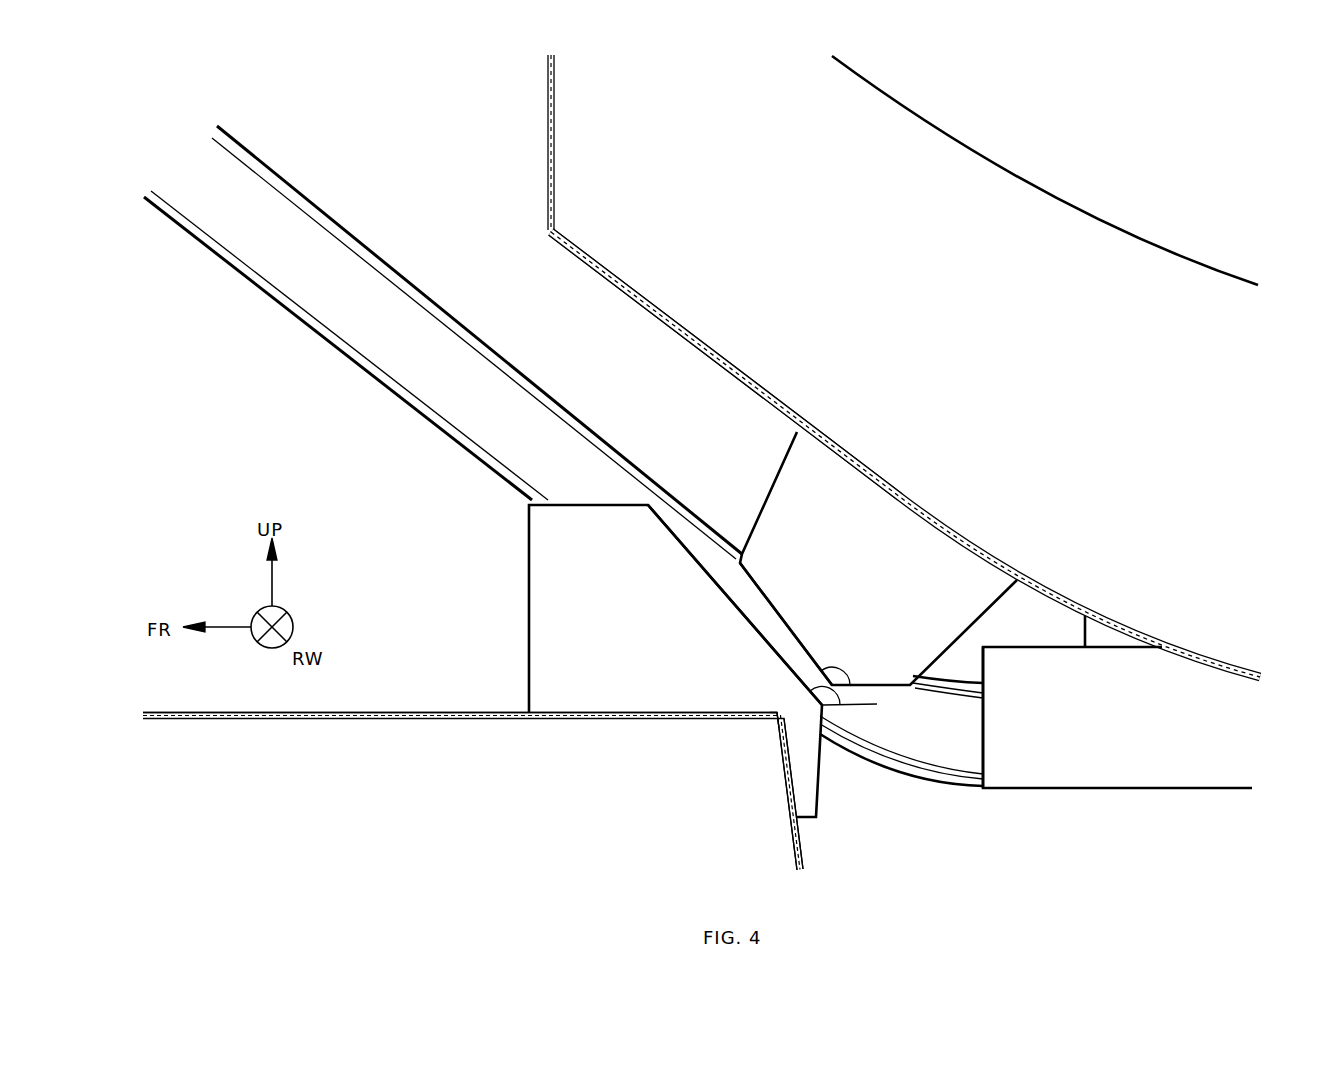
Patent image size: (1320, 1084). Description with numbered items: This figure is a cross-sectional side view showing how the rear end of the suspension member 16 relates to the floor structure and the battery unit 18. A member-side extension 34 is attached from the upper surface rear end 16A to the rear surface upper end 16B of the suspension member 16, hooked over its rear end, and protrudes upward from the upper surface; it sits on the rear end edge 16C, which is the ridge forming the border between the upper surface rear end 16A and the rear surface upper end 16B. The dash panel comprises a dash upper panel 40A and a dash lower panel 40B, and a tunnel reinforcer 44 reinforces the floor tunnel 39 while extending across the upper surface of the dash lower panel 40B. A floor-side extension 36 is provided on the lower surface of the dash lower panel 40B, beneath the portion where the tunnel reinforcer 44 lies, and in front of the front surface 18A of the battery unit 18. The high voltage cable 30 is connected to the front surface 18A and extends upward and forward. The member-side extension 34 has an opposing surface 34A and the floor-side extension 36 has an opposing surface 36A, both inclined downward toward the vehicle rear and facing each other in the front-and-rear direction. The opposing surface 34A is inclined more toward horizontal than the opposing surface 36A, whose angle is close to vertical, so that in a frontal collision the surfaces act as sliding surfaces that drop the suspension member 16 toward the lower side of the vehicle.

The suspension member 16 is at (453, 712).
The upper surface rear end 16A is at (713, 713).
The rear surface upper end 16B is at (772, 772).
The rear end edge 16C is at (780, 712).
The battery unit 18 is at (1082, 788).
The front surface 18A is at (983, 762).
The high voltage cable 30 is at (287, 183).
The member-side extension 34 is at (528, 605).
The opposing surface 34A is at (663, 517).
The floor-side extension 36 is at (945, 655).
The opposing surface 36A is at (760, 593).
The floor tunnel 39 is at (1000, 168).
The dash upper panel 40A is at (548, 147).
The dash lower panel 40B is at (573, 252).
The tunnel reinforcer 44 is at (668, 318).